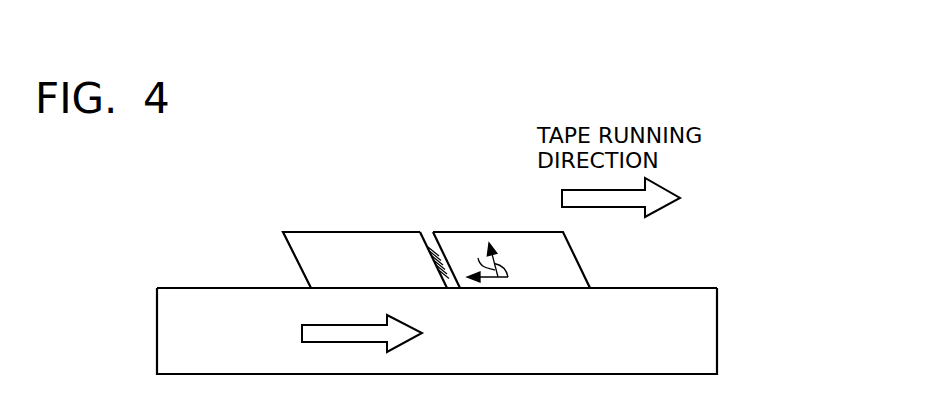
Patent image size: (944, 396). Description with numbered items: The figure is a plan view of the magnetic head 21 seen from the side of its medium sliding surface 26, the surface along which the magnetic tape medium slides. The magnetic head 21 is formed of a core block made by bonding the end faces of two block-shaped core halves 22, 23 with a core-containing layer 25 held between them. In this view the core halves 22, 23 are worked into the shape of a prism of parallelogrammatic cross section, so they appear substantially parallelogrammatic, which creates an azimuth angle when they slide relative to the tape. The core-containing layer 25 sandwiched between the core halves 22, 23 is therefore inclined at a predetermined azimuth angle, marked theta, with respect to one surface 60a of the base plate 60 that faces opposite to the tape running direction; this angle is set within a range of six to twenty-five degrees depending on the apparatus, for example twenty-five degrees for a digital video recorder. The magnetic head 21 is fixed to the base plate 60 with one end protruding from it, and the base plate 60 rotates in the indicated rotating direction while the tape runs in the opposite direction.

The magnetic head 21 is at (478, 220).
The core half 22 is at (507, 232).
The core half 23 is at (342, 229).
The core-containing layer 25 is at (423, 232).
The medium sliding surface 26 is at (353, 232).
The base plate 60 is at (477, 318).
The surface of the base plate 60a is at (698, 288).